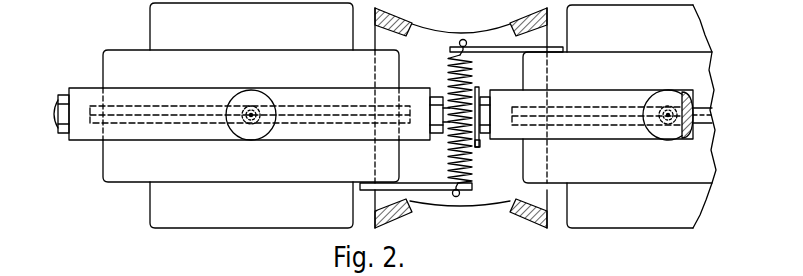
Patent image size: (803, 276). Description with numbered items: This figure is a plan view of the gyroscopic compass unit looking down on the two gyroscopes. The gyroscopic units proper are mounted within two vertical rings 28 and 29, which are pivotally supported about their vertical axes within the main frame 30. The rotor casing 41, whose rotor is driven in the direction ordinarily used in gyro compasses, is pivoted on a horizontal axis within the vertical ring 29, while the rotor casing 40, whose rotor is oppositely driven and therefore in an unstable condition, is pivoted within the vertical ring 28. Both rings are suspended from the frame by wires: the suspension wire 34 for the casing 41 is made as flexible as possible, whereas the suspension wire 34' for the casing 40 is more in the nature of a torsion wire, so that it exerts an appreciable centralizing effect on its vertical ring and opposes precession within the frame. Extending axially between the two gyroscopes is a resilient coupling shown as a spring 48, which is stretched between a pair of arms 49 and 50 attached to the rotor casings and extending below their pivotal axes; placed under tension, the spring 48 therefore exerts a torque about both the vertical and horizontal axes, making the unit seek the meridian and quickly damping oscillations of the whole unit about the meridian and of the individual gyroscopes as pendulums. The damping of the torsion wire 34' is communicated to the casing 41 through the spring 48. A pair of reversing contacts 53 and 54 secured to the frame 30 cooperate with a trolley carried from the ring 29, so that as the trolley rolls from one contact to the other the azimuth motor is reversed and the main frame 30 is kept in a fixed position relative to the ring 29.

The rotor casing 41 is at (151, 229).
The vertical ring 29 is at (323, 88).
The suspension wire 34 is at (254, 130).
The main frame 30 is at (513, 213).
The arm 49 is at (420, 183).
The arm 50 is at (510, 53).
The spring 48 is at (471, 161).
The reversing contact 53 is at (478, 88).
The reversing contact 54 is at (481, 143).
The vertical ring 28 is at (602, 90).
The torsion wire 34' is at (667, 131).
The rotor casing 40 is at (695, 229).